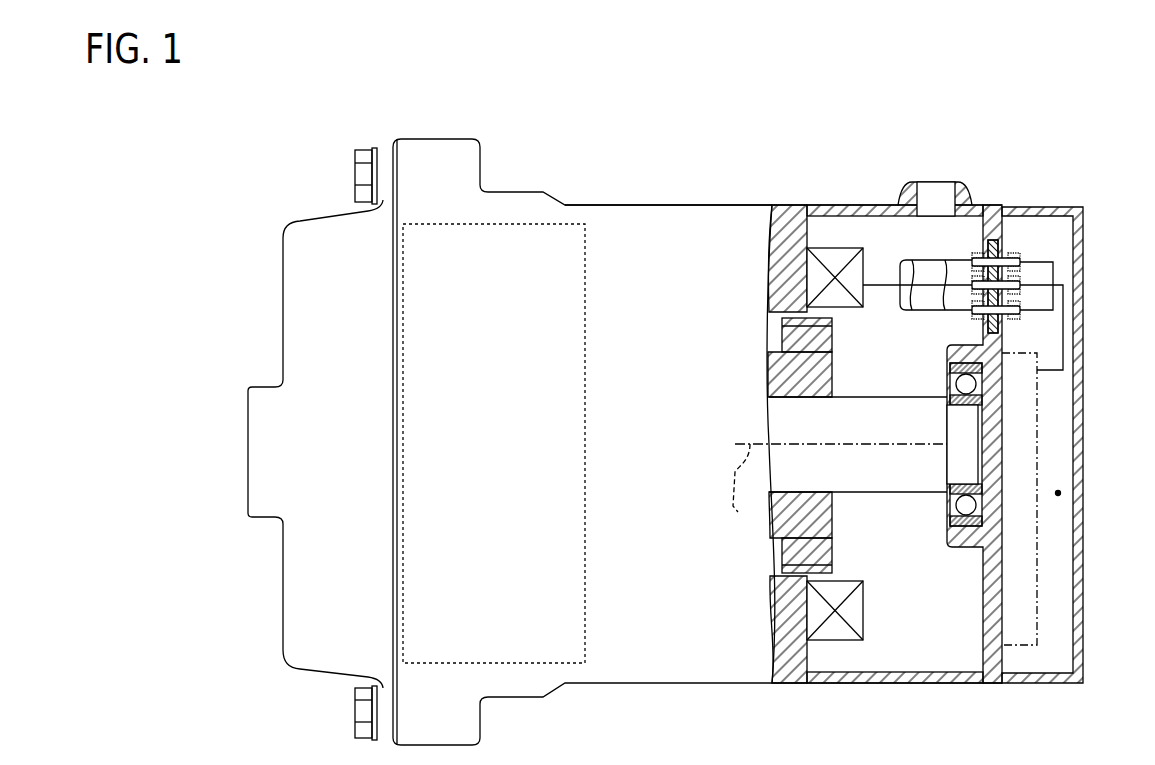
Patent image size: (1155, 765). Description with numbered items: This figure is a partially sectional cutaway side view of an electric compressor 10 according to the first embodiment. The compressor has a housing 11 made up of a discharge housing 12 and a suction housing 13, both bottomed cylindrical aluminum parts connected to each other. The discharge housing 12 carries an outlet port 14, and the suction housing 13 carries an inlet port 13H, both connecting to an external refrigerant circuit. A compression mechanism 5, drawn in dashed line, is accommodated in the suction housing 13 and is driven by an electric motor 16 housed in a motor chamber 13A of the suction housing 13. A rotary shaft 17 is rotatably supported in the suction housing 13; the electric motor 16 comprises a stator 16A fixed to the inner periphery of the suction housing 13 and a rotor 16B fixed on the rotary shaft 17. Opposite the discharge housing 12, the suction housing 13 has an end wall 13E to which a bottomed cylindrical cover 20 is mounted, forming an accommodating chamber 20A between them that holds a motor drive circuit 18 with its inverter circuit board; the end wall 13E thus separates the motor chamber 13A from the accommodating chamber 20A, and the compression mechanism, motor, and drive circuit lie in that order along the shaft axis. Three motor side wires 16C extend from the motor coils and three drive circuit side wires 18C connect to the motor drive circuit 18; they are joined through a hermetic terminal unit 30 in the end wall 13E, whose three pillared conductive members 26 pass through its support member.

The electric compressor 10 is at (345, 147).
The discharge housing 12 is at (298, 221).
The outlet port 14 is at (256, 386).
The drive unit 5 is at (523, 218).
The suction housing 13 is at (668, 204).
The housing 11 is at (746, 204).
The inlet port 13H is at (925, 181).
The motor chamber 13A is at (930, 524).
The end wall 13E is at (986, 566).
The rotary shaft 17 is at (885, 396).
The electric motor 16 is at (800, 686).
The stator 16A is at (800, 622).
The rotor 16B is at (833, 541).
The motor side wires 16C is at (900, 284).
The conductive members 26 is at (966, 272).
The hermetic terminal unit 30 is at (1012, 240).
The motor drive circuit 18 is at (1040, 453).
The drive circuit side wires 18C is at (1056, 305).
The cover 20 is at (1055, 206).
The accommodating chamber 20A is at (1060, 493).